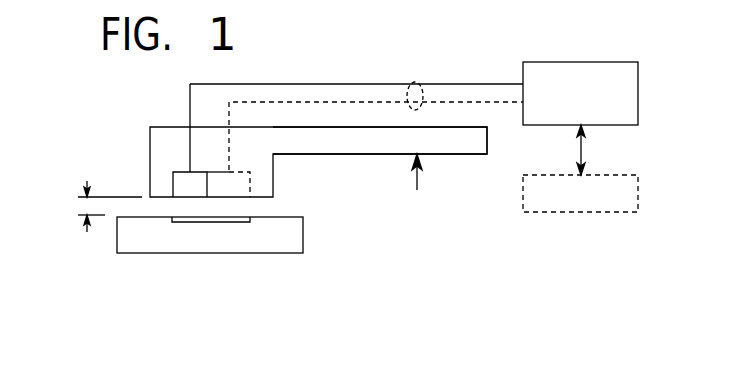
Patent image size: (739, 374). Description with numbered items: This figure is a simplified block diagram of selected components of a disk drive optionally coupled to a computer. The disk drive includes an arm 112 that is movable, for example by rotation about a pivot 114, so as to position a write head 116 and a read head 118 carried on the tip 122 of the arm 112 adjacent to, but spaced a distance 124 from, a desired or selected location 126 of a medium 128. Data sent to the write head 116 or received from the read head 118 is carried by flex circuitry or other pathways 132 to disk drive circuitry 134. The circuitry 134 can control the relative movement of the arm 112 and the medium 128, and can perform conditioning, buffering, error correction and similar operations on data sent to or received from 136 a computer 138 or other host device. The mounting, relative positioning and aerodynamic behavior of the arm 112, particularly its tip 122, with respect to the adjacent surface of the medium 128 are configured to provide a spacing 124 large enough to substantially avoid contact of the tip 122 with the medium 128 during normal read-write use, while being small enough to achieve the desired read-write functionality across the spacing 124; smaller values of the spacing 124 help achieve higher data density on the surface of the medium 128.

The arm 112 is at (307, 155).
The pivot 114 is at (417, 183).
The write head 116 is at (250, 183).
The read head 118 is at (174, 182).
The tip 122 is at (163, 127).
The spacing 124 is at (84, 208).
The selected location 126 is at (233, 222).
The medium 128 is at (303, 238).
The flex circuitry or other pathways 132 is at (415, 82).
The disk drive circuitry 134 is at (593, 62).
The data sent from or received from computer 136 is at (583, 155).
The computer 138 is at (608, 212).